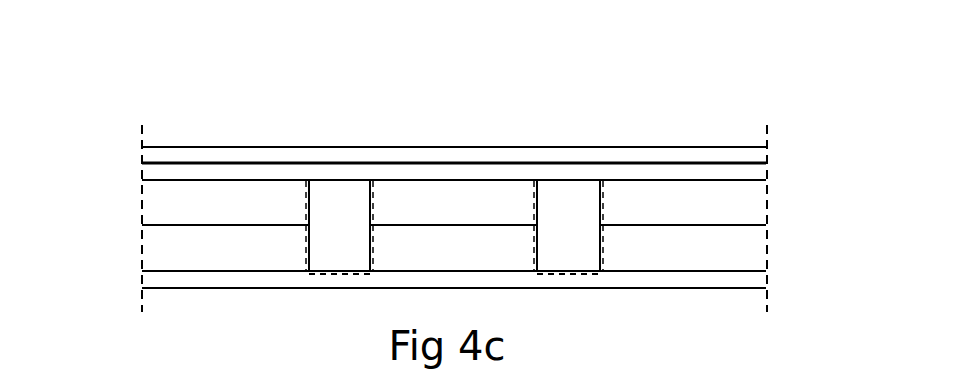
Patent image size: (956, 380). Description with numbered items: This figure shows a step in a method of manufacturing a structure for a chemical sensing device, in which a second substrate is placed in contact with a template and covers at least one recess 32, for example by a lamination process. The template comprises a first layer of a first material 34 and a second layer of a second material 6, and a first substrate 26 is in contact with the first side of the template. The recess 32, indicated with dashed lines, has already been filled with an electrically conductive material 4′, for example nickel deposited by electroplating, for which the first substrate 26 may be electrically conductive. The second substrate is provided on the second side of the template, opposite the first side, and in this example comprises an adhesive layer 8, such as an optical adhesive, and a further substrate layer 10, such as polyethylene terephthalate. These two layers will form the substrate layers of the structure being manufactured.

The further substrate layer 10 is at (184, 155).
The adhesive layer 8 is at (187, 172).
The second layer of a second material 6 is at (187, 206).
The first layer of a first material 34 is at (187, 250).
The first substrate 26 is at (747, 280).
The electrically conductive material 4′ is at (343, 195).
The recess 32 is at (340, 273).